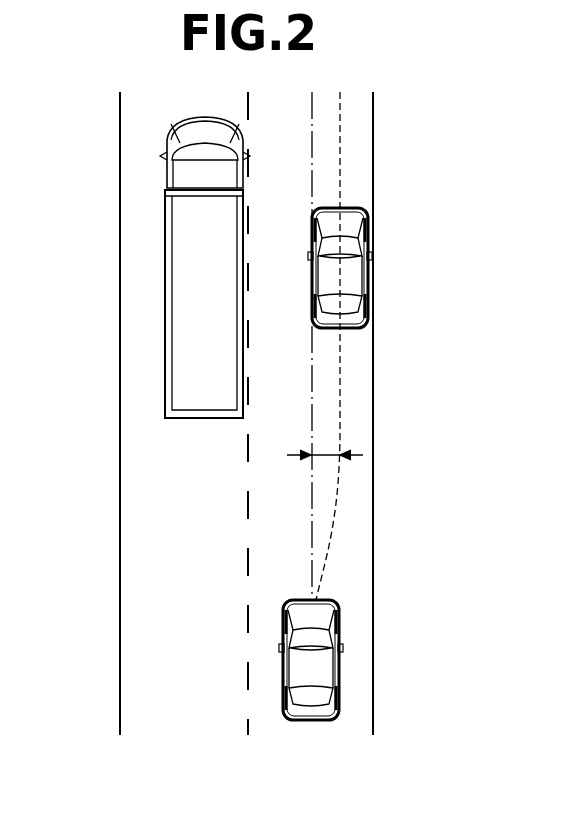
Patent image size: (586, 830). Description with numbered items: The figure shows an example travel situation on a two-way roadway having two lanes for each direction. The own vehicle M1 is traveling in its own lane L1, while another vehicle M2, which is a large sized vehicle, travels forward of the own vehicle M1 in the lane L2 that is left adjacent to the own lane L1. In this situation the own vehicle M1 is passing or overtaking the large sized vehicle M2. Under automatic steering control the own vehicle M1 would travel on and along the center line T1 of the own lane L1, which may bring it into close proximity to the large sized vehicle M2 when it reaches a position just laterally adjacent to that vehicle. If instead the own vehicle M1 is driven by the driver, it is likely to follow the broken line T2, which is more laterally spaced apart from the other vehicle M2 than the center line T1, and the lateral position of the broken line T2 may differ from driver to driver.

The own vehicle M1 is at (367, 257).
The other vehicle M2 is at (165, 258).
The center line T1 is at (312, 521).
The broken line T2 is at (338, 420).
The own lane L1 is at (351, 726).
The lane L2 is at (178, 726).